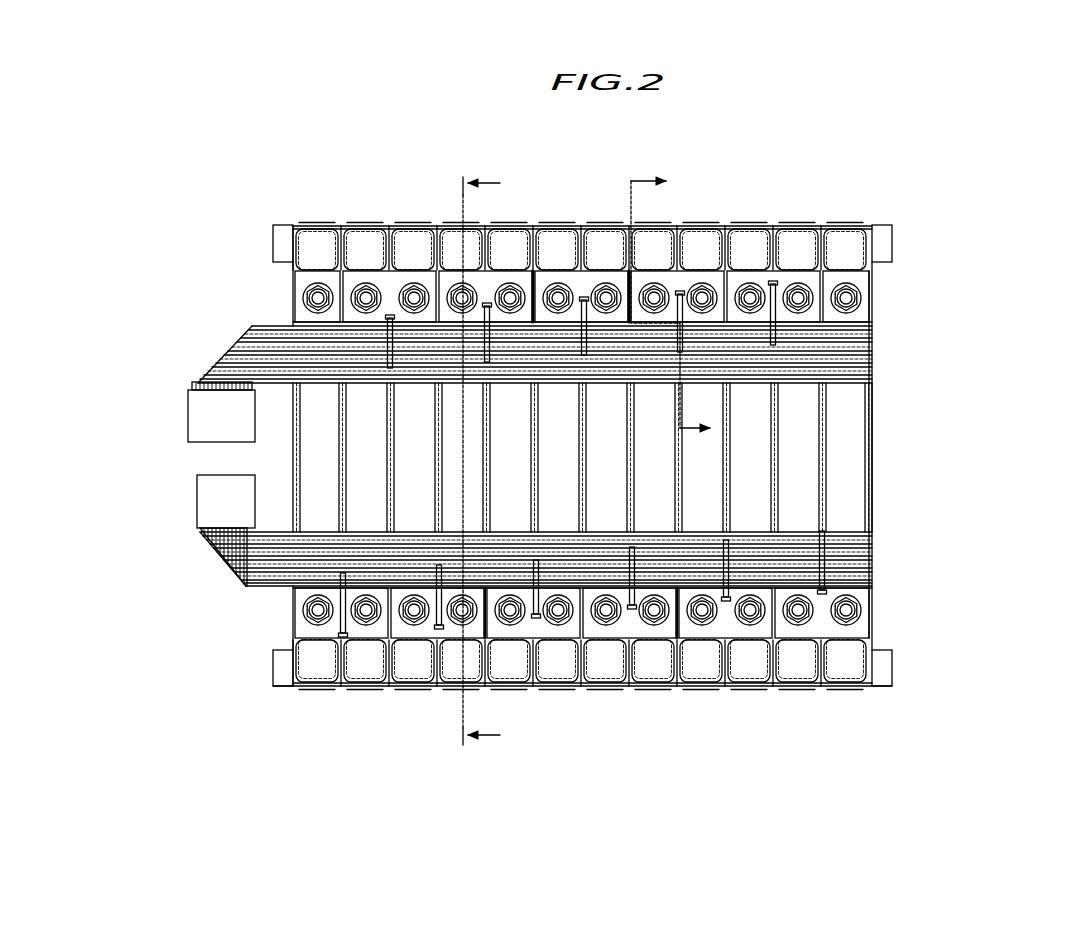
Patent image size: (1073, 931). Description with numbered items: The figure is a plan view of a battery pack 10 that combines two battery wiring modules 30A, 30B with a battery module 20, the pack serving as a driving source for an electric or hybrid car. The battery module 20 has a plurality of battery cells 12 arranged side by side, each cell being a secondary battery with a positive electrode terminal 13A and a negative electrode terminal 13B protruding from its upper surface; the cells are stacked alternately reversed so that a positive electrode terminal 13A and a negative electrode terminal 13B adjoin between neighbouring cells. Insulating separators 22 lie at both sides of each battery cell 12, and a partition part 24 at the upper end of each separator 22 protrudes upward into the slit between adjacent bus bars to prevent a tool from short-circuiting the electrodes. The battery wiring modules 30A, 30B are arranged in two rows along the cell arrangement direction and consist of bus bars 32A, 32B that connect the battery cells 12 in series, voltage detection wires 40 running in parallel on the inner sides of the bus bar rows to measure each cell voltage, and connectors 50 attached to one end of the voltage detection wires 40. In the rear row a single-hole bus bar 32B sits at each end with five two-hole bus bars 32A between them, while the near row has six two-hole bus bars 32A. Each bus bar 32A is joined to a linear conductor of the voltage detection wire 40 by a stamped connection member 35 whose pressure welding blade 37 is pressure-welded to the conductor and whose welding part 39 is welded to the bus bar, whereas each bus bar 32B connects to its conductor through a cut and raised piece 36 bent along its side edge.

The battery pack 10 is at (930, 142).
The battery cell 12 is at (414, 450).
The positive electrode terminal 13A is at (414, 288).
The negative electrode terminal 13B is at (366, 288).
The battery module 20 is at (882, 277).
The separator 22 is at (273, 670).
The partition part 24 is at (638, 318).
The battery wiring module 30A is at (802, 391).
The battery wiring module 30B is at (753, 524).
The bus bar 32A is at (399, 266).
The bus bar 32B is at (315, 266).
The connection member 35 is at (354, 588).
The cut and raised piece 36 is at (292, 323).
The pressure welding blade 37 is at (289, 580).
The welding part 39 is at (339, 636).
The voltage detection wire 40 is at (418, 534).
The connector 50 is at (200, 414).